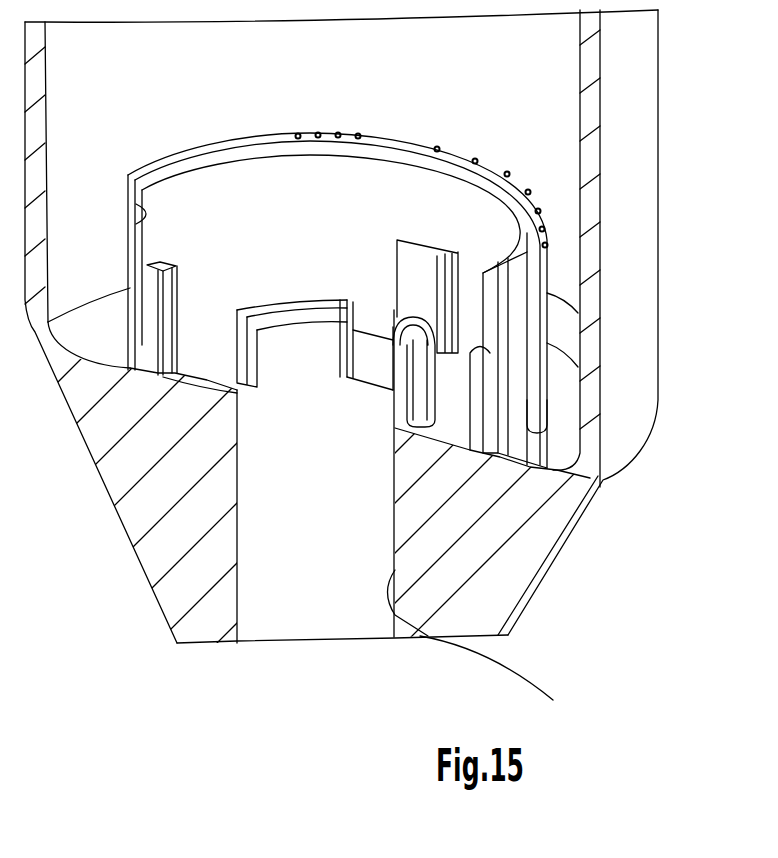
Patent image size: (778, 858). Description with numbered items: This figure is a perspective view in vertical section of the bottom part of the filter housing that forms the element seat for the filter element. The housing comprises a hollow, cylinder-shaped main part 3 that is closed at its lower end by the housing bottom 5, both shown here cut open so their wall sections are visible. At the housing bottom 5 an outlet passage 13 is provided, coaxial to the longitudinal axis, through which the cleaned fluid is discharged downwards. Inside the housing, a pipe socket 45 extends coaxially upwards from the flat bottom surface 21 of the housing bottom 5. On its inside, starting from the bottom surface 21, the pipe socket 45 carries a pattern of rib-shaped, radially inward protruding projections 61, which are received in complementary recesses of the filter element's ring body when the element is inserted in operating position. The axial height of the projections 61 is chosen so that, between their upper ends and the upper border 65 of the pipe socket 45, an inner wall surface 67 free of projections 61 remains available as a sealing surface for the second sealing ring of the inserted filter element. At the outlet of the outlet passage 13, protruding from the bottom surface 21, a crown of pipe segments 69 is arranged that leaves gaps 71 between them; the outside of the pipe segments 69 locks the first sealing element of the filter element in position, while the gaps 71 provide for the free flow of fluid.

The main part 3 is at (590, 117).
The housing bottom 5 is at (187, 527).
The outlet passage 13 is at (499, 676).
The bottom surface 21 is at (158, 375).
The pipe socket 45 is at (128, 245).
The projections 61 is at (178, 300).
The upper border 65 is at (327, 134).
The inner wall surface 67 is at (127, 217).
The pipe segments 69 is at (270, 300).
The gaps 71 is at (367, 323).